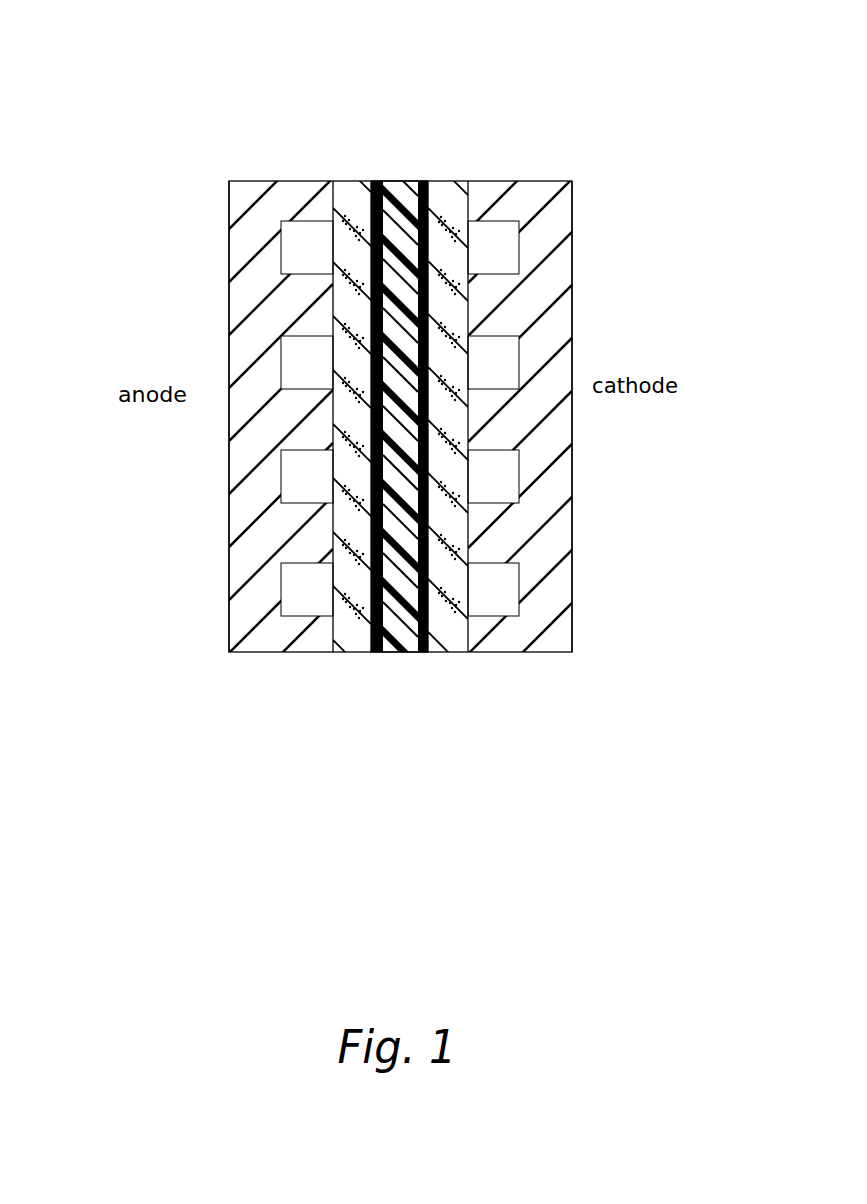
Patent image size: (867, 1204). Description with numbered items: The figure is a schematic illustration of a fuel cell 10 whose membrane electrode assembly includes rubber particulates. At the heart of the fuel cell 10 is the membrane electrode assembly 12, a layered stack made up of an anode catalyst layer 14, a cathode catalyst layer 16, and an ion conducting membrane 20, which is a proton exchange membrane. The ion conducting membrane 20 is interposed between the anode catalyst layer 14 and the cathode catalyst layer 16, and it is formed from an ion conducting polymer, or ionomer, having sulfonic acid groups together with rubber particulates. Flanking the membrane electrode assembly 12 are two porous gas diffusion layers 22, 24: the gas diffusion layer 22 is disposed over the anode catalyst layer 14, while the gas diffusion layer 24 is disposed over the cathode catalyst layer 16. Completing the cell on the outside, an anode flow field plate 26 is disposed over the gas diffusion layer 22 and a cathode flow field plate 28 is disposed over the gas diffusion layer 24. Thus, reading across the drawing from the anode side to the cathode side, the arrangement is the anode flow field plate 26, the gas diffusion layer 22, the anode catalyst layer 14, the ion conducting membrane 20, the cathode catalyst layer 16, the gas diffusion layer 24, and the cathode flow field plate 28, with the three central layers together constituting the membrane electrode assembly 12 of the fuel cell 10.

The fuel cell 10 is at (163, 93).
The membrane electrode assembly 12 is at (372, 181).
The anode catalyst layer 14 is at (375, 653).
The cathode catalyst layer 16 is at (425, 653).
The ion conducting membrane 20 is at (395, 653).
The gas diffusion layer 22 is at (358, 181).
The gas diffusion layer 24 is at (443, 181).
The anode flow field plate 26 is at (230, 230).
The cathode flow field plate 28 is at (566, 213).